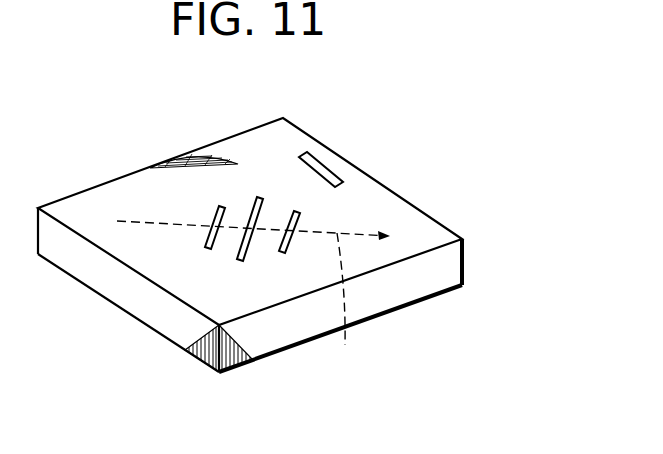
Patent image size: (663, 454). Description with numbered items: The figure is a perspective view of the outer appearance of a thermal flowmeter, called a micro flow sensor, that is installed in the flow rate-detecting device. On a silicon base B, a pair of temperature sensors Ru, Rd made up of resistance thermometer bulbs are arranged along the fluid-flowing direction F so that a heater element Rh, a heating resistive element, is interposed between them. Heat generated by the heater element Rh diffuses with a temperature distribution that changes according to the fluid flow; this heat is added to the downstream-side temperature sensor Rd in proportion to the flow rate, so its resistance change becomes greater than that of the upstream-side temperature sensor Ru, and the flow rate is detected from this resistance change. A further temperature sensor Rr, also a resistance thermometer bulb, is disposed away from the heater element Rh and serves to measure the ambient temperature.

The silicon base B is at (133, 191).
The upstream-side temperature sensor Ru is at (207, 240).
The heater element Rh is at (258, 199).
The downstream-side temperature sensor Rd is at (297, 212).
The temperature sensor for ambient temperature Rr is at (323, 167).
The fluid-flowing direction F is at (253, 300).